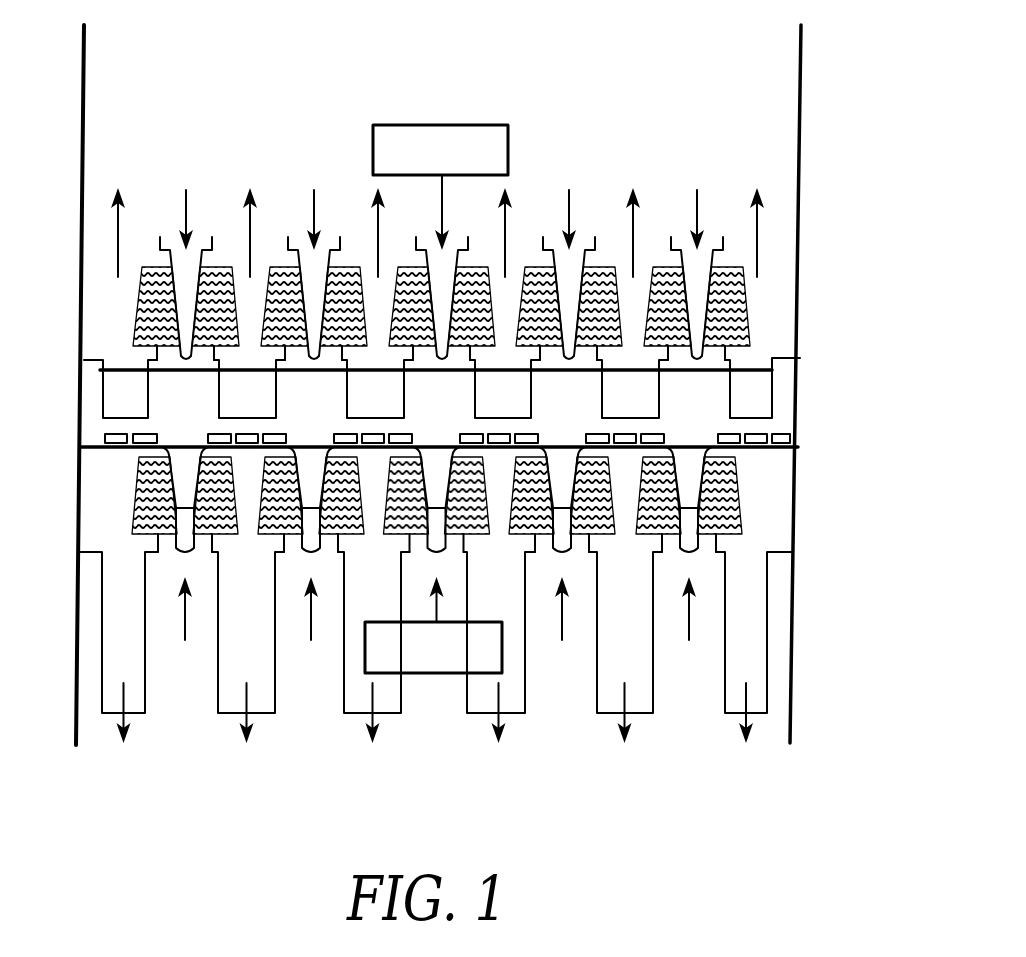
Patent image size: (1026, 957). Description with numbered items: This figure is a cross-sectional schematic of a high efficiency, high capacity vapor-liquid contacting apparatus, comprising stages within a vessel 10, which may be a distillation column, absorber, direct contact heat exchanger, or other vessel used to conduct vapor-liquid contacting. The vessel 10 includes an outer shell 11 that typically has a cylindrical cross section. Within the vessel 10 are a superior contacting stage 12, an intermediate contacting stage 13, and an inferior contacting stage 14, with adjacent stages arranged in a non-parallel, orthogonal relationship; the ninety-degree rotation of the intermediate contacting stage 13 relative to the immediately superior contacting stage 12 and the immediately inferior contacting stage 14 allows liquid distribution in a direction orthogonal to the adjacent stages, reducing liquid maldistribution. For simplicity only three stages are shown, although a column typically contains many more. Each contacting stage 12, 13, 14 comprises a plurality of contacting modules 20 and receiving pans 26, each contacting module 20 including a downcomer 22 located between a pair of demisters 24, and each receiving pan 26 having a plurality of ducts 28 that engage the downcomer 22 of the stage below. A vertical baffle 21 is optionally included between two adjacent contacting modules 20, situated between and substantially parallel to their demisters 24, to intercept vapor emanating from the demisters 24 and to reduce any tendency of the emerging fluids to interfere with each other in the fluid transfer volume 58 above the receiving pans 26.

The vessel 10 is at (827, 61).
The outer shell 11 is at (80, 110).
The superior contacting stage 12 is at (505, 242).
The intermediate contacting stage 13 is at (486, 381).
The inferior contacting stage 14 is at (487, 595).
The contacting module 20 is at (762, 513).
The vertical baffle 21 is at (627, 458).
The downcomer 22 is at (793, 440).
The demister 24 is at (483, 270).
The receiving pan 26 is at (790, 357).
The duct 28 is at (465, 373).
The fluid transfer volume 58 is at (627, 300).